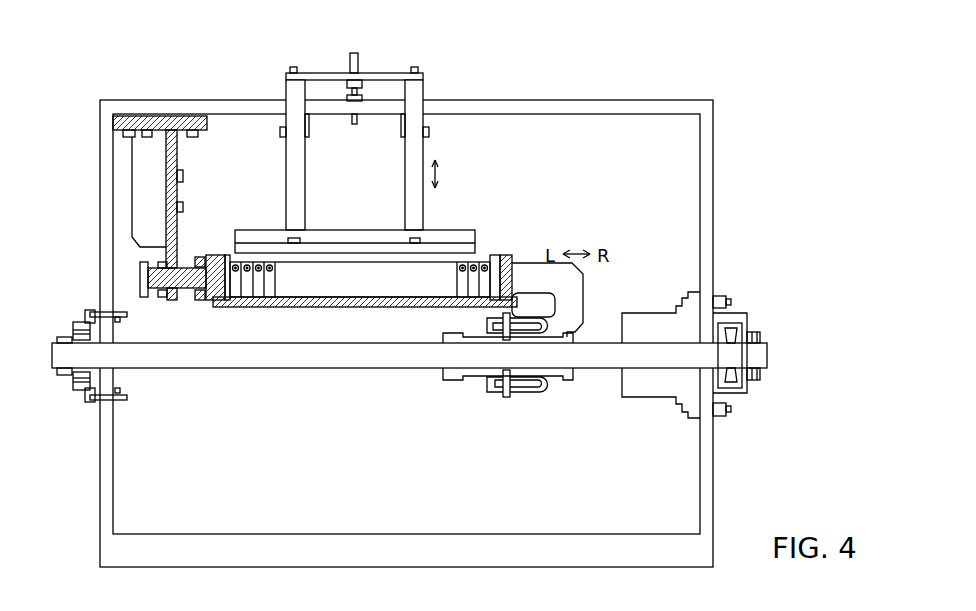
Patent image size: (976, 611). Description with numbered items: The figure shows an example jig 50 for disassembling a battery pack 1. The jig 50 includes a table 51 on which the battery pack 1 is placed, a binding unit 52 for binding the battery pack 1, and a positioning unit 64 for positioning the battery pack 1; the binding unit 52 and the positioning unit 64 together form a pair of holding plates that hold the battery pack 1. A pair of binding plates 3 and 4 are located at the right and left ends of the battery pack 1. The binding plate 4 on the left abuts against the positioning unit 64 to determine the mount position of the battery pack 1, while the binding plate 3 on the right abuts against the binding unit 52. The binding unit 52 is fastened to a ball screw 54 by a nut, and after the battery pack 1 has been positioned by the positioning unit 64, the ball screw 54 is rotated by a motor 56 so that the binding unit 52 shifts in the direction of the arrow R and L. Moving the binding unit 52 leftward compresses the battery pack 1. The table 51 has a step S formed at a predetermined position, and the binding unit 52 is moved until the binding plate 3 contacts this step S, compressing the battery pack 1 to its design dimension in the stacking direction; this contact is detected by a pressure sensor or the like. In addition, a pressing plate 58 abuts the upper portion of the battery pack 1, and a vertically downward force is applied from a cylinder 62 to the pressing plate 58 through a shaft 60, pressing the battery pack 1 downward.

The jig 50 is at (714, 68).
The shaft 60 is at (424, 145).
The cylinder 62 is at (362, 69).
The pressing plate 58 is at (446, 229).
The binding plate 3 is at (498, 255).
The battery pack 1 is at (384, 288).
The binding plate 4 is at (224, 255).
The positioning unit 64 is at (138, 268).
The binding unit 52 is at (513, 259).
The table 51 is at (288, 308).
The step S is at (484, 308).
The ball screw 54 is at (375, 369).
The motor 56 is at (653, 312).